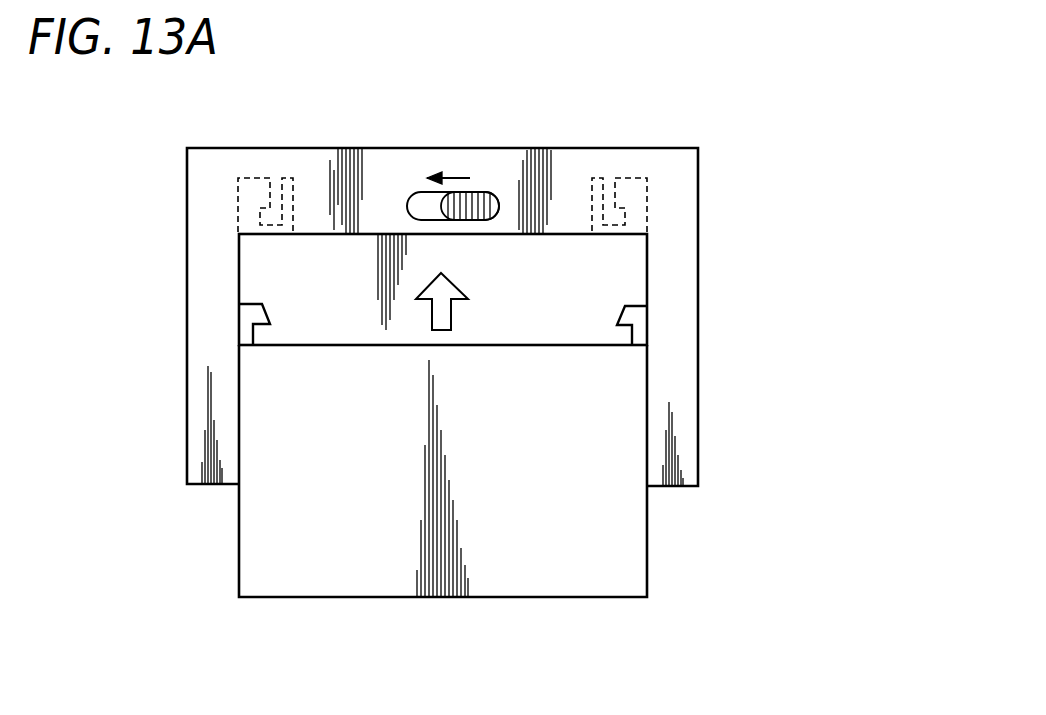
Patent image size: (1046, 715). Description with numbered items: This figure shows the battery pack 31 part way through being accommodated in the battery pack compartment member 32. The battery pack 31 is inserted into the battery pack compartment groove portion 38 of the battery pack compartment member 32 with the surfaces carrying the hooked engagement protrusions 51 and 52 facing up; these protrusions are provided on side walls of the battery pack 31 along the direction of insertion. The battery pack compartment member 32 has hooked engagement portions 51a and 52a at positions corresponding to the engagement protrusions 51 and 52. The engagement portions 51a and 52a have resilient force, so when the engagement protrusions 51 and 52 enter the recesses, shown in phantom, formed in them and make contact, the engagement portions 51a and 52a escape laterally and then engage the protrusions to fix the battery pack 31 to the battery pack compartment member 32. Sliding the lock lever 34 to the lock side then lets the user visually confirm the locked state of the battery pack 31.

The battery pack 31 is at (495, 570).
The battery pack compartment member 32 is at (678, 403).
The lock lever 34 is at (486, 192).
The battery pack compartment groove portion 38 is at (617, 263).
The engagement protrusion 51 is at (239, 322).
The engagement protrusion 52 is at (637, 325).
The engagement portion 51a is at (266, 183).
The engagement portion 52a is at (619, 183).